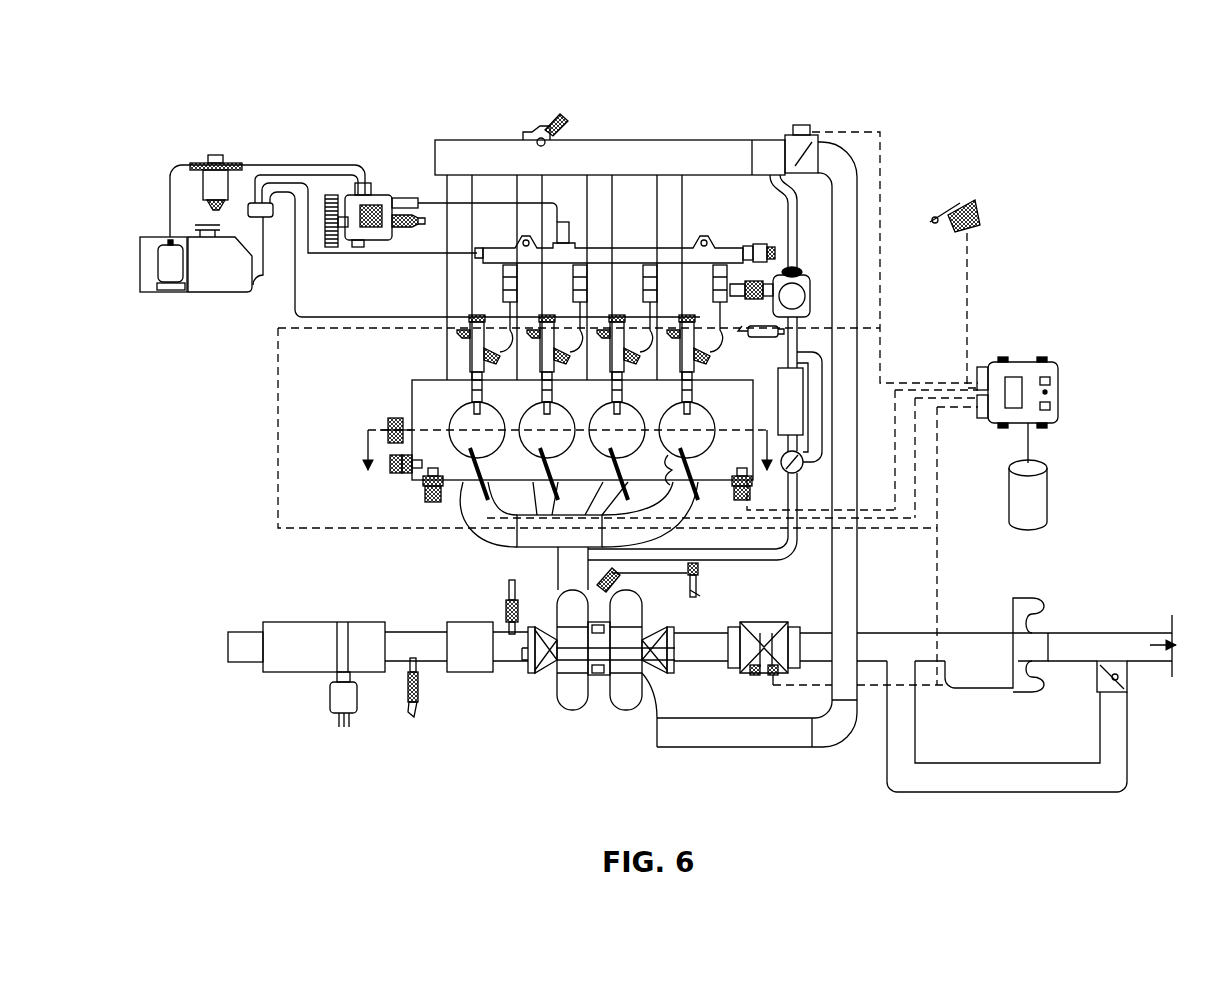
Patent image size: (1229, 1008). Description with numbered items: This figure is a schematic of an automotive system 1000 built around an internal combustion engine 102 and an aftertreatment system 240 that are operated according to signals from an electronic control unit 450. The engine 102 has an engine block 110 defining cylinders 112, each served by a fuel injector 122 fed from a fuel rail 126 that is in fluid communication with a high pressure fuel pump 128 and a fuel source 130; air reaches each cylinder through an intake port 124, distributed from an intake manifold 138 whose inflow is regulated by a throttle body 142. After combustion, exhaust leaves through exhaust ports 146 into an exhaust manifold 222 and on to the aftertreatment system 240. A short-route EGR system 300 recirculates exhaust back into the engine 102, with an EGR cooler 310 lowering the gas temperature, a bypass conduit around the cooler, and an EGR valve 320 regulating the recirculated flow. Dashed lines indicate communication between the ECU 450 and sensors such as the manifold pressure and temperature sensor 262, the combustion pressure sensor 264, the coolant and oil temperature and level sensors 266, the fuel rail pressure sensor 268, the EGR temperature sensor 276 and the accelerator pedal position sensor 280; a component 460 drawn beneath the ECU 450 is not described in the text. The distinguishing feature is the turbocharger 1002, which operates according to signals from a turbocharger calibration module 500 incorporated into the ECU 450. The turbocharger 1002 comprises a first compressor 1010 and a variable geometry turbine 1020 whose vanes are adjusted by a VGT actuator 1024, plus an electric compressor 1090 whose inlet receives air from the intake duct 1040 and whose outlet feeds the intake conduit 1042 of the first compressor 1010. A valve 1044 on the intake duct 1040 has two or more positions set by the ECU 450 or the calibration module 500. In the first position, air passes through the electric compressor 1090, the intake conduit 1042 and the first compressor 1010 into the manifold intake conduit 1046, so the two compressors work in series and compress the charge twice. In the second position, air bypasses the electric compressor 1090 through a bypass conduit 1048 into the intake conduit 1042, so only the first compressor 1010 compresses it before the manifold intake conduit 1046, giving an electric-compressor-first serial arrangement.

The automotive system 1000 is at (283, 122).
The internal combustion engine 102 is at (686, 130).
The engine block 110 is at (410, 388).
The cylinder 112 is at (715, 422).
The fuel injector 122 is at (475, 360).
The intake port 124 is at (452, 381).
The fuel rail 126 is at (478, 263).
The high pressure fuel pump 128 is at (385, 190).
The fuel source 130 is at (218, 268).
The intake manifold 138 is at (588, 163).
The throttle body 142 is at (798, 125).
The exhaust port 146 is at (467, 483).
The exhaust manifold 222 is at (572, 537).
The aftertreatment system 240 is at (310, 612).
The manifold pressure and temperature sensor 262 is at (530, 128).
The combustion pressure sensor 264 is at (487, 490).
The coolant and oil temperature and level sensors 266 is at (437, 502).
The fuel rail pressure sensor 268 is at (772, 246).
The EGR temperature sensor 276 is at (785, 327).
The accelerator pedal position sensor 280 is at (978, 210).
The EGR system 300 is at (749, 566).
The EGR cooler 310 is at (793, 402).
The EGR valve 320 is at (795, 273).
The electronic control unit 450 is at (1062, 390).
The memory 460 is at (1028, 533).
The turbocharger calibration module 500 is at (1013, 378).
The turbocharger 1002 is at (571, 715).
The first compressor 1010 is at (627, 688).
The turbine 1020 is at (567, 688).
The VGT actuator 1024 is at (620, 582).
The intake duct 1040 is at (1127, 633).
The intake conduit 1042 is at (888, 632).
The valve 1044 is at (1128, 677).
The manifold intake conduit 1046 is at (860, 577).
The bypass conduit 1048 is at (1007, 793).
The electric compressor 1090 is at (1020, 695).